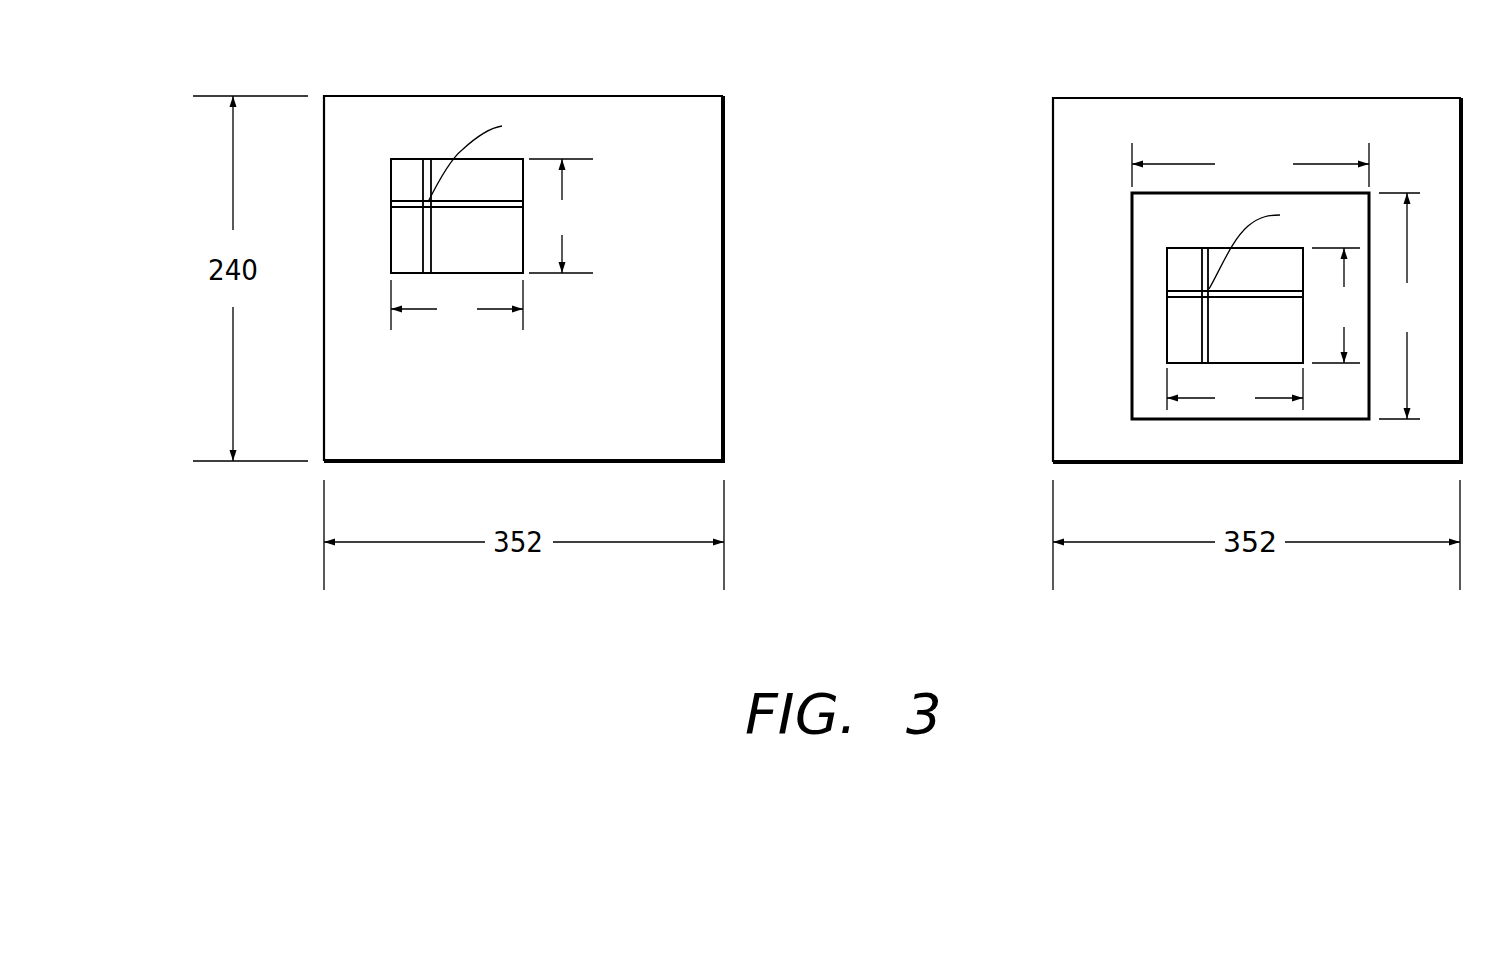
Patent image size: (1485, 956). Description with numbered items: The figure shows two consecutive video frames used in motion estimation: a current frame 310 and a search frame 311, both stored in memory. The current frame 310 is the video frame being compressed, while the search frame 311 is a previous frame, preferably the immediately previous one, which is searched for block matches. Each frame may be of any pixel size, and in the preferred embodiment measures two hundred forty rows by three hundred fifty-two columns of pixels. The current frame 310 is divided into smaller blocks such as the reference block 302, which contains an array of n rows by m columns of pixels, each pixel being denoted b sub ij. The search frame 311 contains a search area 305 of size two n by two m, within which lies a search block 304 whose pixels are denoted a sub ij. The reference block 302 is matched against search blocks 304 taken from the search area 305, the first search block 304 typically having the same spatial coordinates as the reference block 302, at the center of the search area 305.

The reference block 302 is at (391, 258).
The search block 304 is at (1167, 343).
The search area 305 is at (1132, 245).
The current frame 310 is at (323, 460).
The search frame 311 is at (1053, 459).